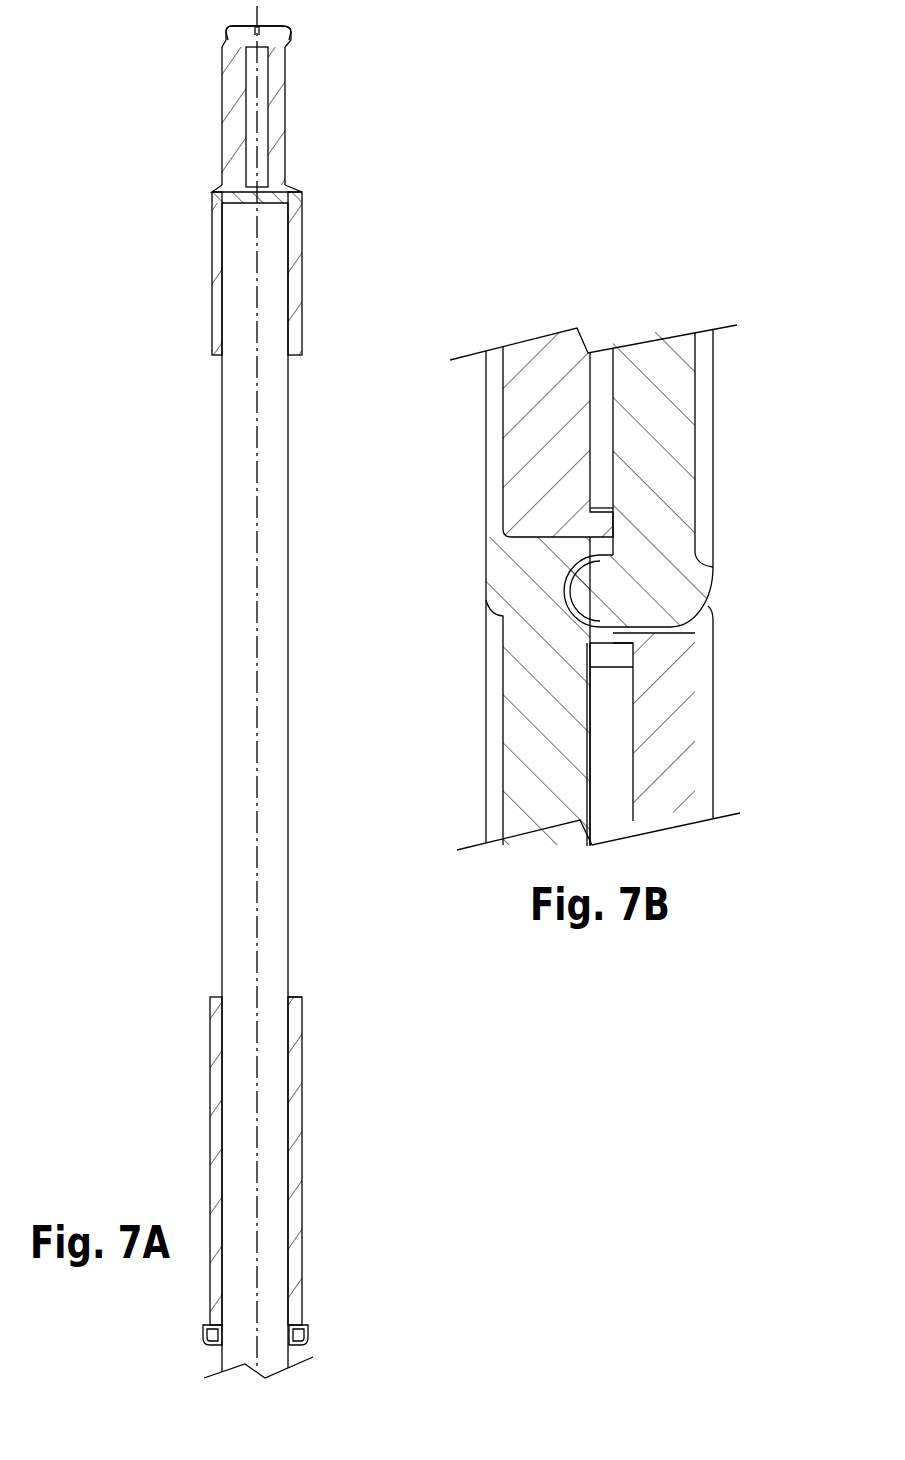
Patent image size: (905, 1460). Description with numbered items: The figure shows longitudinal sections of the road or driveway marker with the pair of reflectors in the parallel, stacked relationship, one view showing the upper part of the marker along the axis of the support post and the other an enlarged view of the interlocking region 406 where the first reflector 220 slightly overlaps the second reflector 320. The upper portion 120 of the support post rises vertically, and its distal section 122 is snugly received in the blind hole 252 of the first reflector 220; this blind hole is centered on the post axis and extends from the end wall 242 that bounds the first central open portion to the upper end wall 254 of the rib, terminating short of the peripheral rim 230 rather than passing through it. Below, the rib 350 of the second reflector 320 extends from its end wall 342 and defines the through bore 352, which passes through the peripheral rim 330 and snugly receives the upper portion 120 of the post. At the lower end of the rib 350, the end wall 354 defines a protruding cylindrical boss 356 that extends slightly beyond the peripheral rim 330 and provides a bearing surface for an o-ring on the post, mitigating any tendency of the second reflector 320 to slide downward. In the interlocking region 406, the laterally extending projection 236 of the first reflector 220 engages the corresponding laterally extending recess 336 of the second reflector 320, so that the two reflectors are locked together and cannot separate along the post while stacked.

In FIG. 7A, the upper portion of the support post 120 is at (243, 460).
In FIG. 7A, the distal section of the support post 122 is at (249, 292).
In FIG. 7A, the first reflector 220 is at (300, 104).
In FIG. 7B, the first reflector 220 is at (673, 422).
In FIG. 7A, the peripheral rim 230 is at (270, 14).
In FIG. 7B, the peripheral rim 230 is at (645, 634).
In FIG. 7B, the laterally extending projection 236 is at (603, 588).
In FIG. 7A, the end wall 242 is at (295, 358).
In FIG. 7A, the blind hole 252 is at (296, 243).
In FIG. 7A, the upper end wall 254 is at (268, 204).
In FIG. 7A, the second reflector 320 is at (322, 1231).
In FIG. 7B, the second reflector 320 is at (660, 722).
In FIG. 7B, the peripheral rim 330 is at (582, 540).
In FIG. 7B, the laterally extending recess 336 is at (600, 560).
In FIG. 7A, the end wall 342 is at (294, 998).
In FIG. 7A, the rib 350 is at (297, 1055).
In FIG. 7A, the through bore 352 is at (290, 1130).
In FIG. 7A, the end wall of the rib 354 is at (218, 1344).
In FIG. 7A, the cylindrical boss 356 is at (307, 1340).
In FIG. 7B, the interlocking region 406 is at (727, 592).